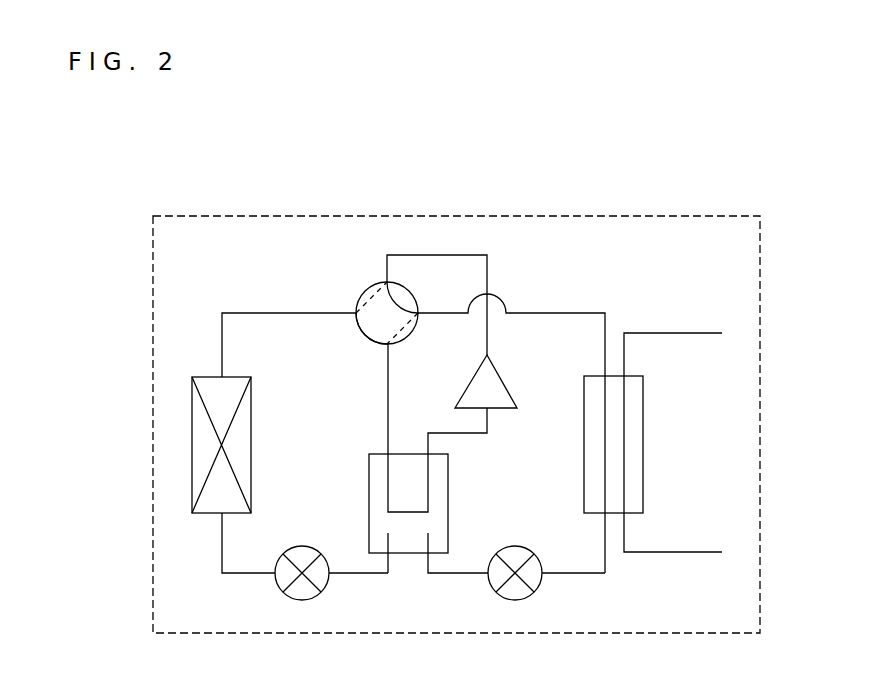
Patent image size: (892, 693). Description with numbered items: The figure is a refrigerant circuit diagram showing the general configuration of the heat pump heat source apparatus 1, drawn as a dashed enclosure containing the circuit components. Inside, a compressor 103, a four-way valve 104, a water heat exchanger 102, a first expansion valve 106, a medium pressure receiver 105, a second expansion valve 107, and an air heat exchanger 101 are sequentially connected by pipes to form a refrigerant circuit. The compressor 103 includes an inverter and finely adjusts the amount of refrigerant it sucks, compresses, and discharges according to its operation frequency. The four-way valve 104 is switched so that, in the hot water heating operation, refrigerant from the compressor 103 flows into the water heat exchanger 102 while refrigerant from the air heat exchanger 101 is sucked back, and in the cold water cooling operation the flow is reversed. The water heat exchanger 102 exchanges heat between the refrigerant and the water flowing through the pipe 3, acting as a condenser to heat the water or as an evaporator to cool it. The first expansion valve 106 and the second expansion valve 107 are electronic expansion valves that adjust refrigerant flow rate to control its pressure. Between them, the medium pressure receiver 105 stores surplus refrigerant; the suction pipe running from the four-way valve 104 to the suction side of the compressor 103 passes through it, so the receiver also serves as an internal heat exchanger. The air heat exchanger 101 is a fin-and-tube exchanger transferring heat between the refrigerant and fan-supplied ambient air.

The heat pump heat source apparatus 1 is at (484, 216).
The pipe 3 is at (682, 333).
The air heat exchanger 101 is at (251, 425).
The water heat exchanger 102 is at (643, 432).
The compressor 103 is at (508, 373).
The four-way valve 104 is at (365, 293).
The medium pressure receiver 105 is at (448, 490).
The first expansion valve 106 is at (538, 590).
The second expansion valve 107 is at (322, 590).